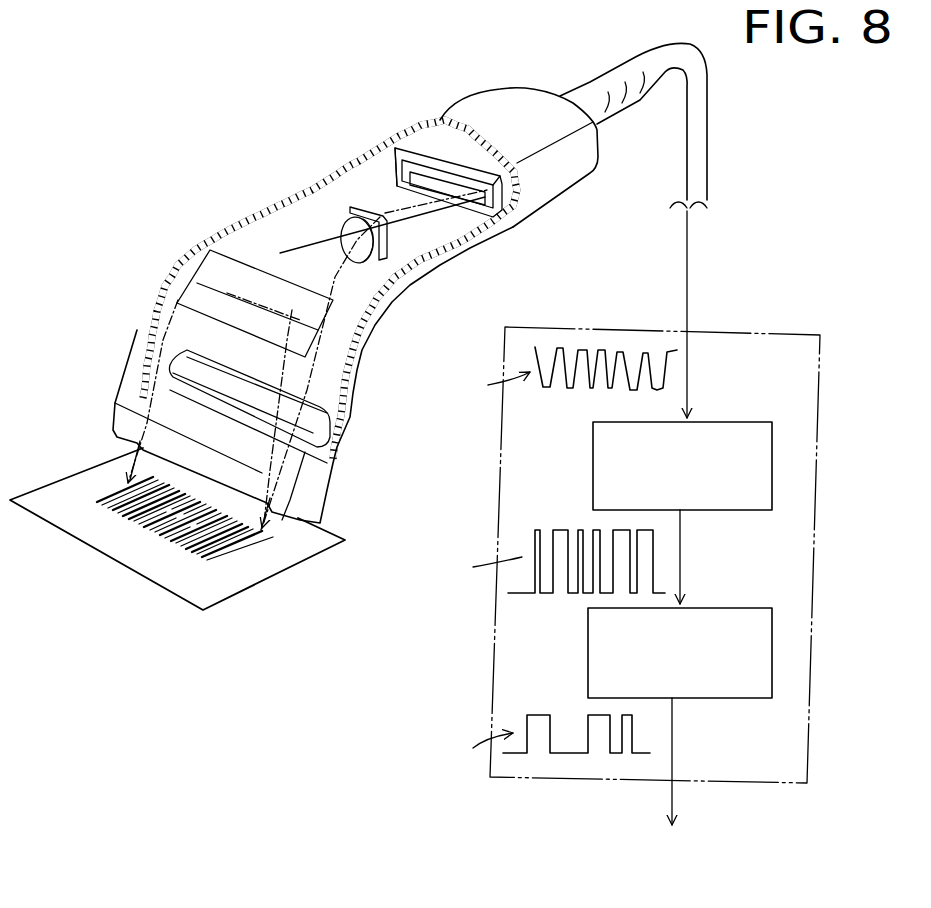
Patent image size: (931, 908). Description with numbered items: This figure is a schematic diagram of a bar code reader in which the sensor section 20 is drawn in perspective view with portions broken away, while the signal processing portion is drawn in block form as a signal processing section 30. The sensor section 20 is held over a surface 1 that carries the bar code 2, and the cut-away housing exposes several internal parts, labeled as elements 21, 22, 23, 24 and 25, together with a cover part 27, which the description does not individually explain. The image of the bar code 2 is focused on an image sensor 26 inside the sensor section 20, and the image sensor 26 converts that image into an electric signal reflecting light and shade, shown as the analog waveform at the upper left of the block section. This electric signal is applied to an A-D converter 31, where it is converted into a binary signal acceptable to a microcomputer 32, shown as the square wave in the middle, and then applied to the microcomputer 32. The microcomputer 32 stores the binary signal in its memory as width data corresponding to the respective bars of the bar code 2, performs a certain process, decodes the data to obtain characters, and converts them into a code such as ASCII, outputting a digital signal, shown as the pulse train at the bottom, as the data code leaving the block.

The sheet bearing bar code 1 is at (60, 480).
The bar code 2 is at (115, 480).
The sensor section 20 is at (346, 105).
The light emitting element array 21 is at (323, 400).
The light receiving window 22 is at (330, 457).
The housing wall 23 is at (227, 252).
The reflecting mirror 24 is at (350, 207).
The lens 25 is at (358, 212).
The image sensor 26 is at (412, 122).
The casing cover 27 is at (497, 103).
The signal processing circuit 30 is at (495, 603).
The A-D converter 31 is at (750, 421).
The microcomputer 32 is at (753, 606).